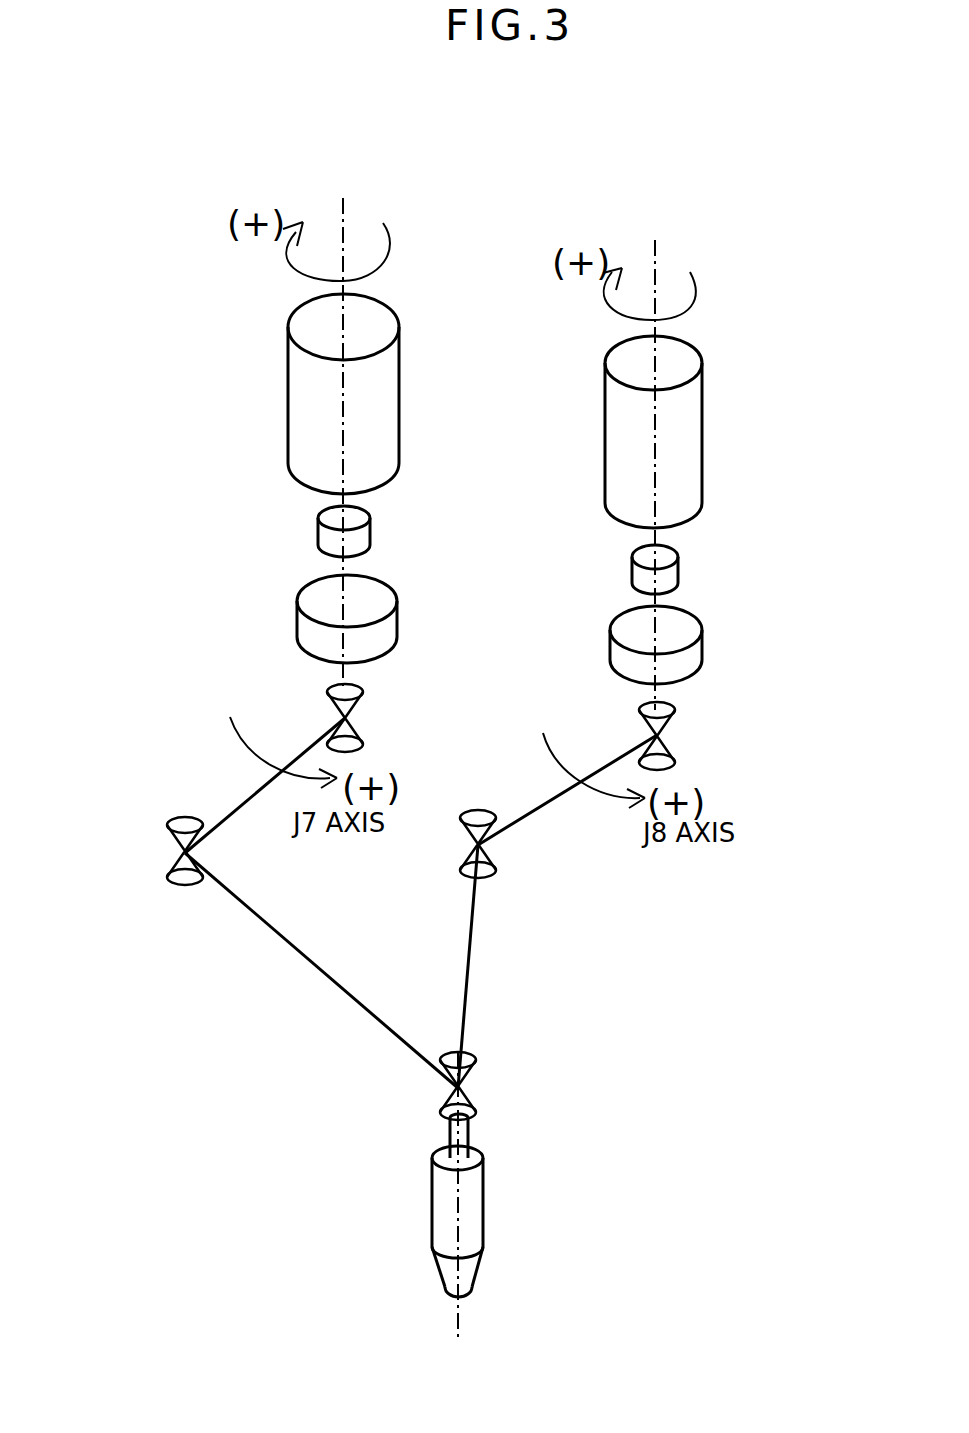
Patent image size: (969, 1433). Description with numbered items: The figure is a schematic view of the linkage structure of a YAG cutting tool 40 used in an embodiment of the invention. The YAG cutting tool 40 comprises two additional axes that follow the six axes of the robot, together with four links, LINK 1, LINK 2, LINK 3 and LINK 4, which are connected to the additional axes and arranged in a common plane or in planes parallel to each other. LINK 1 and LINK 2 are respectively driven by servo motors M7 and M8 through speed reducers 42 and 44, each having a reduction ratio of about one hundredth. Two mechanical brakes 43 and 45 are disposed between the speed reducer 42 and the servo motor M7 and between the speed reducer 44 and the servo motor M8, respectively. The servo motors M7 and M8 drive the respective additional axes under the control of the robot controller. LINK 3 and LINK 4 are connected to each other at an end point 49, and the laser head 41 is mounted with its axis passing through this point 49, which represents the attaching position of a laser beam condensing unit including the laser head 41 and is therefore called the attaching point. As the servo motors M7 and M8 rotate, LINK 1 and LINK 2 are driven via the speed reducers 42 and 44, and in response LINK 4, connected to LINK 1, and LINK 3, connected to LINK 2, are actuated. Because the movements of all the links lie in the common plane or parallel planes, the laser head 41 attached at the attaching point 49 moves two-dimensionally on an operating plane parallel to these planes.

The YAG cutting tool 40 is at (517, 202).
The laser head 41 is at (485, 1205).
The speed reducer 42 is at (305, 632).
The mechanical brake 43 is at (318, 540).
The speed reducer 44 is at (692, 658).
The mechanical brake 45 is at (672, 578).
The attaching point 49 is at (468, 1087).
The servo motor M7 is at (288, 415).
The servo motor M8 is at (692, 420).
The link 1 LINK 1 is at (230, 805).
The link 2 LINK 2 is at (555, 802).
The link 3 LINK 3 is at (468, 967).
The link 4 LINK 4 is at (307, 960).